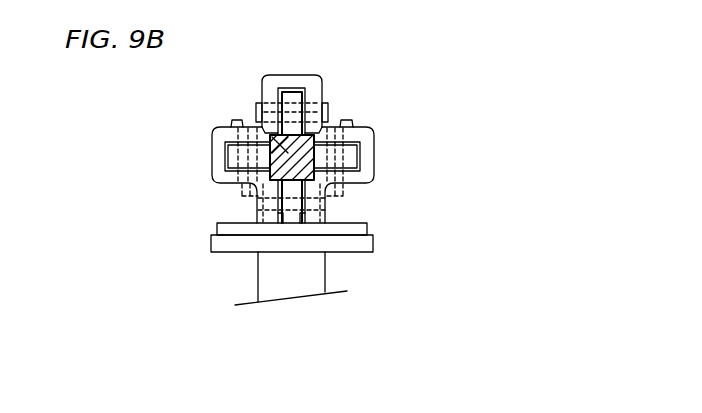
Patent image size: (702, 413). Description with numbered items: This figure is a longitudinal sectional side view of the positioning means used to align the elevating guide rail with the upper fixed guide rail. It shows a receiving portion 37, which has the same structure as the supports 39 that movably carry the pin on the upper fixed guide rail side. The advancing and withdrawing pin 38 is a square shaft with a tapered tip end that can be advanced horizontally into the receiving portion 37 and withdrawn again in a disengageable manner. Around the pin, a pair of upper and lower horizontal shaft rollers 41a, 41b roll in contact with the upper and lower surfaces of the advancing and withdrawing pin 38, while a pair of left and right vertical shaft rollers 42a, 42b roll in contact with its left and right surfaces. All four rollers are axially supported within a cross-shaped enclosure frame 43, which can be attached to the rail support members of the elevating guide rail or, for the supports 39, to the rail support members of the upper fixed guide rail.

The receiving portion 37 is at (359, 170).
The support 39 is at (378, 140).
The advancing and withdrawing pin 38 is at (258, 118).
The upper horizontal shaft roller 41a is at (292, 92).
The lower horizontal shaft roller 41b is at (292, 218).
The left vertical shaft roller 42a is at (228, 153).
The right vertical shaft roller 42b is at (352, 157).
The cross-shaped enclosure frame 43 is at (315, 84).